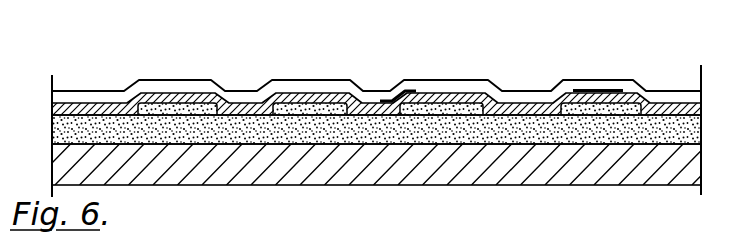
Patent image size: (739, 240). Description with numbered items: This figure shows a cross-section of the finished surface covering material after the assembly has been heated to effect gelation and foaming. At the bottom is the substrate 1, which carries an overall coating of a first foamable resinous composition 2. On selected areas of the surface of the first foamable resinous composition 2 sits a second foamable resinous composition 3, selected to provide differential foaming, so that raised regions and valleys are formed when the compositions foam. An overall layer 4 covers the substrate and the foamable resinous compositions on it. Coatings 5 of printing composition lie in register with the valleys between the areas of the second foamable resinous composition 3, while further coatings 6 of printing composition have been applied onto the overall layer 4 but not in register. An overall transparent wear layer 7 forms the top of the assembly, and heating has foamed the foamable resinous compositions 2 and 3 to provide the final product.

The substrate 1 is at (659, 175).
The first foamable resinous composition 2 is at (676, 125).
The second foamable resinous composition 3 is at (175, 110).
The overall layer 4 is at (470, 85).
The coatings of printing composition 5 is at (233, 100).
The further coatings of printing composition 6 is at (388, 90).
The overall transparent wear layer 7 is at (450, 110).